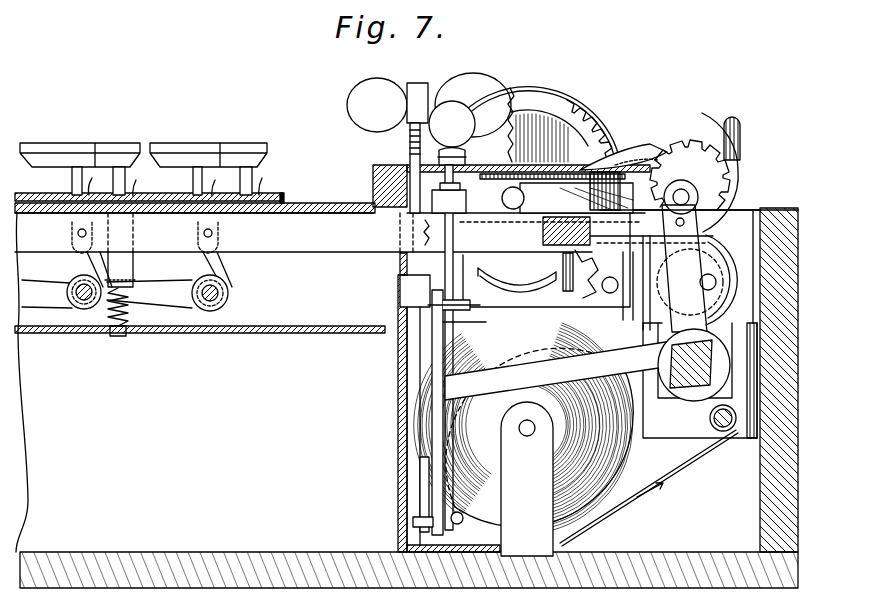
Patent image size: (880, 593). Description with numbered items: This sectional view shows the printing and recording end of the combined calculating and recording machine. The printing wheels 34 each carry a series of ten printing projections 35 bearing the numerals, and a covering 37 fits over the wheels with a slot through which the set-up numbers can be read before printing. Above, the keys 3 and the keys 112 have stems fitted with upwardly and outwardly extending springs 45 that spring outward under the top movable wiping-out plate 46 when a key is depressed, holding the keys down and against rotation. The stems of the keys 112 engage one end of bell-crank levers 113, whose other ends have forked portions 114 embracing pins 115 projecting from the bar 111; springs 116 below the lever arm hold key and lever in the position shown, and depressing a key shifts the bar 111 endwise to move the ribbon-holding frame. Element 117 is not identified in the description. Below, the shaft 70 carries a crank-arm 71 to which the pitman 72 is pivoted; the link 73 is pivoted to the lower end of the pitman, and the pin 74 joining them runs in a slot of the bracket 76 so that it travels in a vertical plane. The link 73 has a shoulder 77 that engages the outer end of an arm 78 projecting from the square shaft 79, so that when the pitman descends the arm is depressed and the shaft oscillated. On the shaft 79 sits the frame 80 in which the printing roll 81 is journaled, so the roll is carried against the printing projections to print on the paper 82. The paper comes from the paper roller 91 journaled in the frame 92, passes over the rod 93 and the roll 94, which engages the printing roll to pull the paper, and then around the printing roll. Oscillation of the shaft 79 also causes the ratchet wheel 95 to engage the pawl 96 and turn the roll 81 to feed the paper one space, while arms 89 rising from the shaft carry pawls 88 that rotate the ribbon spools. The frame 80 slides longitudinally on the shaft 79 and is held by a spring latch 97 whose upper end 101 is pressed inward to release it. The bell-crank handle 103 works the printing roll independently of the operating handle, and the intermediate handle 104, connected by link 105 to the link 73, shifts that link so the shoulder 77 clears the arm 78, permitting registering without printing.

The key 3 is at (60, 143).
The key 112 is at (125, 143).
The spring 45 is at (90, 180).
The top movable plate 46 is at (272, 198).
The bar 111 is at (330, 232).
The forked portion 114 is at (72, 232).
The pin 115 is at (82, 236).
The bell-crank lever 113 is at (58, 280).
The spring 116 is at (130, 316).
The plate 117 is at (278, 333).
The shaft 70 is at (507, 358).
The crank-arm 71 is at (400, 262).
The bell-crank handle 103 is at (418, 95).
The intermediate handle 104 is at (466, 132).
The covering 37 is at (530, 88).
The printing wheel 34 is at (552, 127).
The printing projection 35 is at (608, 130).
The pawl 96 is at (628, 150).
The ratchet wheel 95 is at (680, 148).
The spring latch 97 is at (722, 128).
The upper end of latch 101 is at (742, 147).
The printing roll 81 is at (733, 178).
The paper 82 is at (697, 240).
The roll 94 is at (723, 262).
The arm 89 is at (690, 282).
The frame 80 is at (722, 320).
The pawl 88 is at (552, 248).
The link 105 is at (462, 320).
The paper roller 91 is at (590, 350).
The link 73 is at (463, 357).
The shoulder 77 is at (446, 380).
The arm 78 is at (538, 374).
The angular shaft 79 is at (668, 365).
The frame 92 is at (527, 479).
The pitman 72 is at (440, 492).
The bracket 76 is at (420, 500).
The pin 74 is at (462, 518).
The rod 93 is at (722, 432).